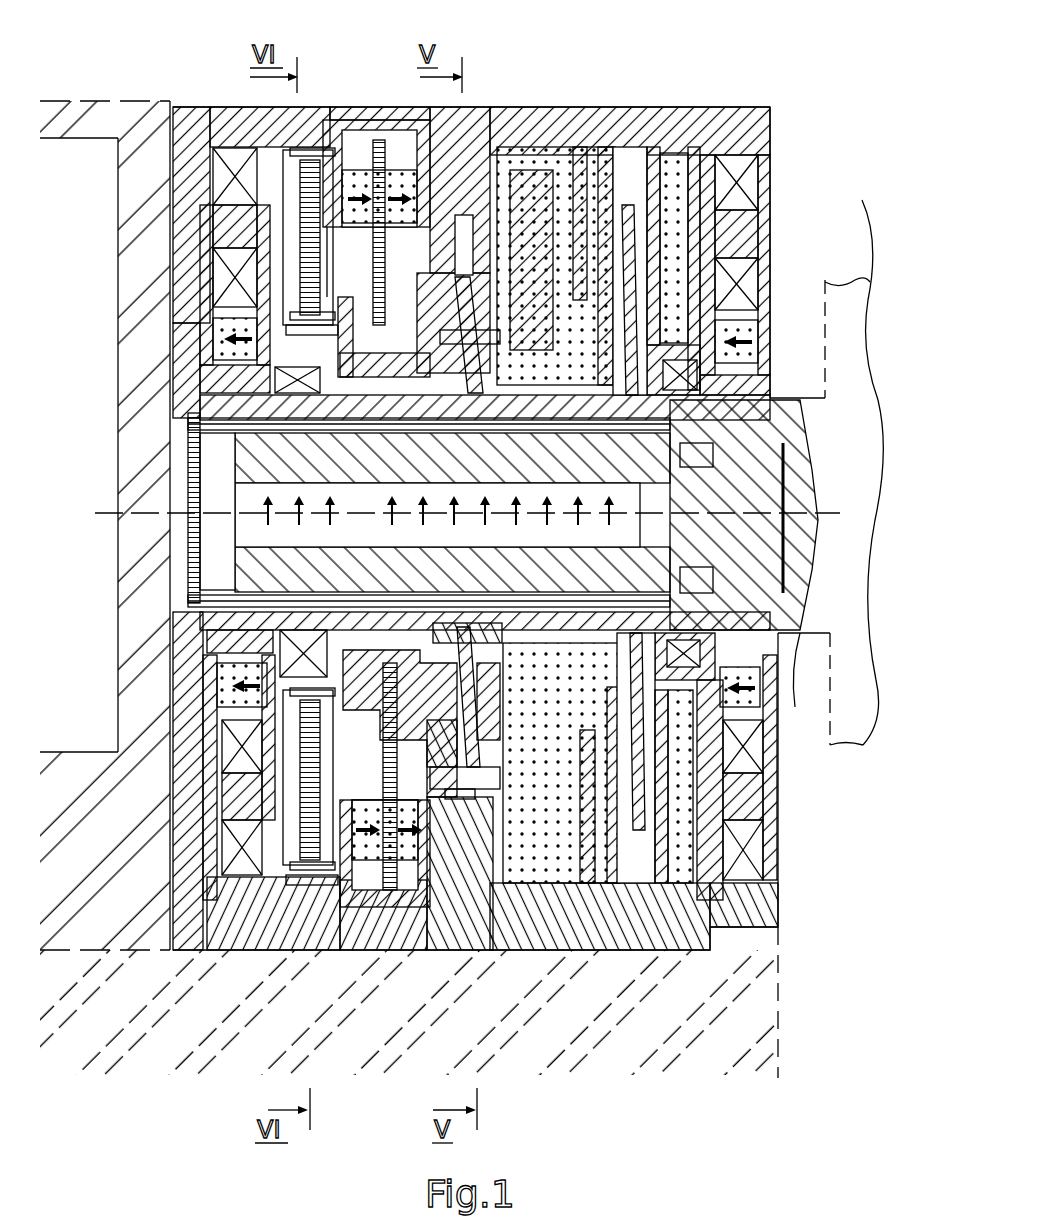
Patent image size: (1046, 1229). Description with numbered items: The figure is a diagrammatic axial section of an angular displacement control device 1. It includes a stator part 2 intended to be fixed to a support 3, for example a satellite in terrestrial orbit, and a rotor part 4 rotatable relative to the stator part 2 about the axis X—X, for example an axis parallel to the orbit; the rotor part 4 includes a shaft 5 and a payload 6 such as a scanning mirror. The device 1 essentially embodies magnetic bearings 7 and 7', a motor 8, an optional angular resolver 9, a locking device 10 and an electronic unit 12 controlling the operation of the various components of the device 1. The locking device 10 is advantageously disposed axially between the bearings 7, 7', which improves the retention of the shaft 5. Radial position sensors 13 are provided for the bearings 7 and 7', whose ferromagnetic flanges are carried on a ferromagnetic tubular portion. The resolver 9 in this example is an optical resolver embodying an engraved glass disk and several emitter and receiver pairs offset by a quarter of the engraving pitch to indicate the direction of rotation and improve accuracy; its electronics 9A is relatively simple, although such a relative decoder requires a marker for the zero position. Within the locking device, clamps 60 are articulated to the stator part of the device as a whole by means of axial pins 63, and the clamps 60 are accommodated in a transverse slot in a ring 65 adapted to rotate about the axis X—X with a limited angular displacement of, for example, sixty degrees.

The angular displacement control device 1 is at (735, 60).
The stator part 2 is at (188, 98).
The support 3 is at (316, 1011).
The rotor part 4 is at (845, 765).
The shaft 5 is at (820, 689).
The payload 6 is at (851, 286).
The bearing 7 is at (751, 527).
The bearing 7' is at (171, 777).
The motor 8 is at (268, 550).
The angular resolver 9 is at (633, 170).
The electronics 9A is at (530, 177).
The locking device 10 is at (462, 215).
The electronic unit 12 is at (130, 160).
The radial position sensor 13 is at (745, 366).
The clamp 60 is at (371, 690).
The axial pin 63 is at (505, 950).
The ring 65 is at (445, 693).